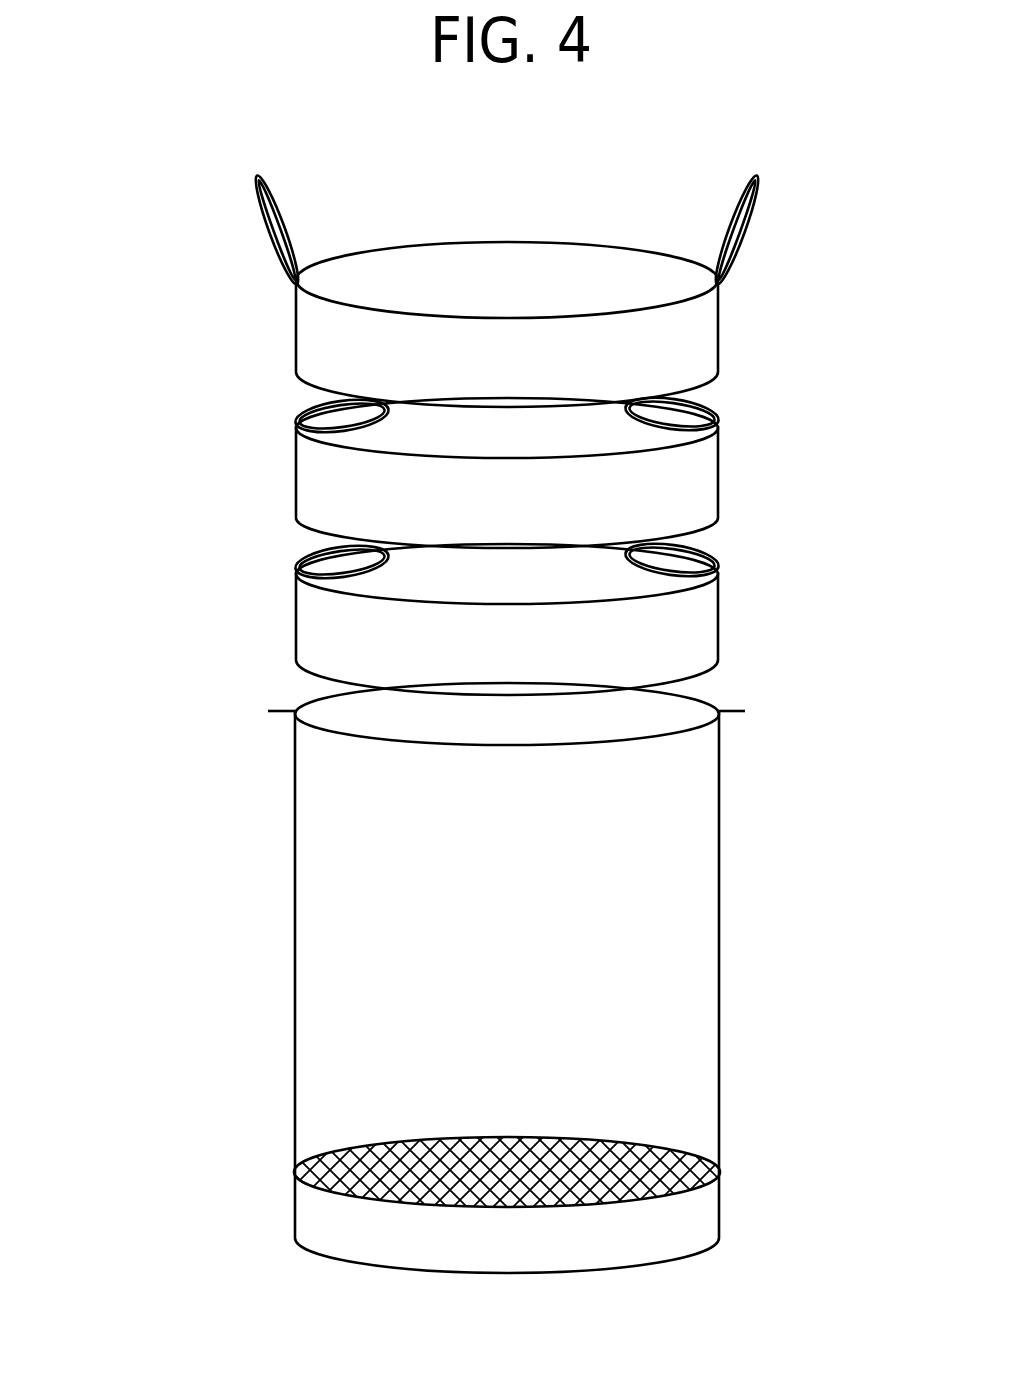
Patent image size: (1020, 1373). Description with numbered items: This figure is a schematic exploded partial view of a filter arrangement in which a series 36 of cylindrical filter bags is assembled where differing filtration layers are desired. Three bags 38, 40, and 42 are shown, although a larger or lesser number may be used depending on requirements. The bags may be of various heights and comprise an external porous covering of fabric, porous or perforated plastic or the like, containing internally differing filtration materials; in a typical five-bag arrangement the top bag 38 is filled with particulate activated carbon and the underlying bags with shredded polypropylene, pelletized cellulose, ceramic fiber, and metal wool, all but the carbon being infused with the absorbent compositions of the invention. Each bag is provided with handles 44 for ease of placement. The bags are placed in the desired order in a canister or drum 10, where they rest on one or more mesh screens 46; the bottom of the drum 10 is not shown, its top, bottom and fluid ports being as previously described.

The canister or drum 10 is at (295, 878).
The series of cylindrical filter bags 36 is at (182, 574).
The top filter bag 38 is at (313, 318).
The filter bag 40 is at (313, 483).
The filter bag 42 is at (326, 632).
The handles 44 is at (266, 224).
The mesh screens 46 is at (348, 1145).